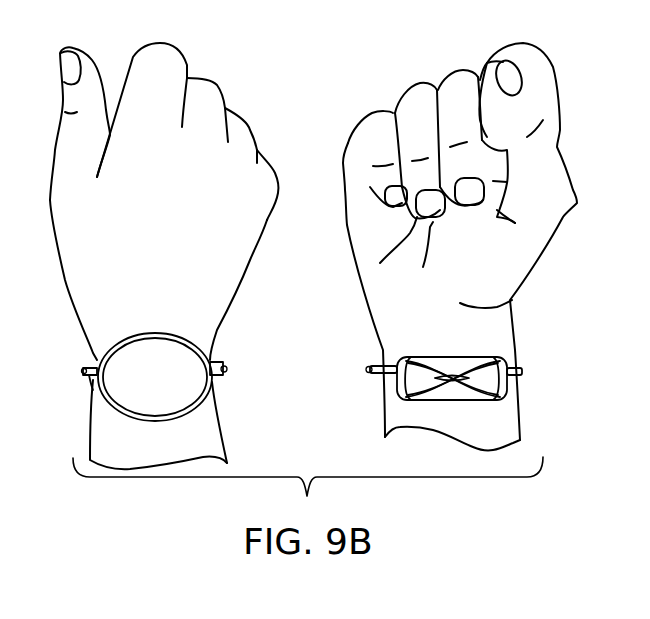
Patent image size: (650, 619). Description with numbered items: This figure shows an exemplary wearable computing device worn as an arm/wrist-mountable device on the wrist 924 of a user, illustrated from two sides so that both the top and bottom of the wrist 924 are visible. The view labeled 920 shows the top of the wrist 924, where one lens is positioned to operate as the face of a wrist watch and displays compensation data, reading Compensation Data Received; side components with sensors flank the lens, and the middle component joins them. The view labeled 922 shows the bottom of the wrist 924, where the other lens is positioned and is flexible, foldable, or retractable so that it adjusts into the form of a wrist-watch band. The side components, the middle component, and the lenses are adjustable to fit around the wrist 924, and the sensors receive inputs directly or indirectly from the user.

The first wearable device configuration 920 is at (246, 312).
The second wearable device configuration 922 is at (355, 310).
The wrist 924 is at (262, 57).